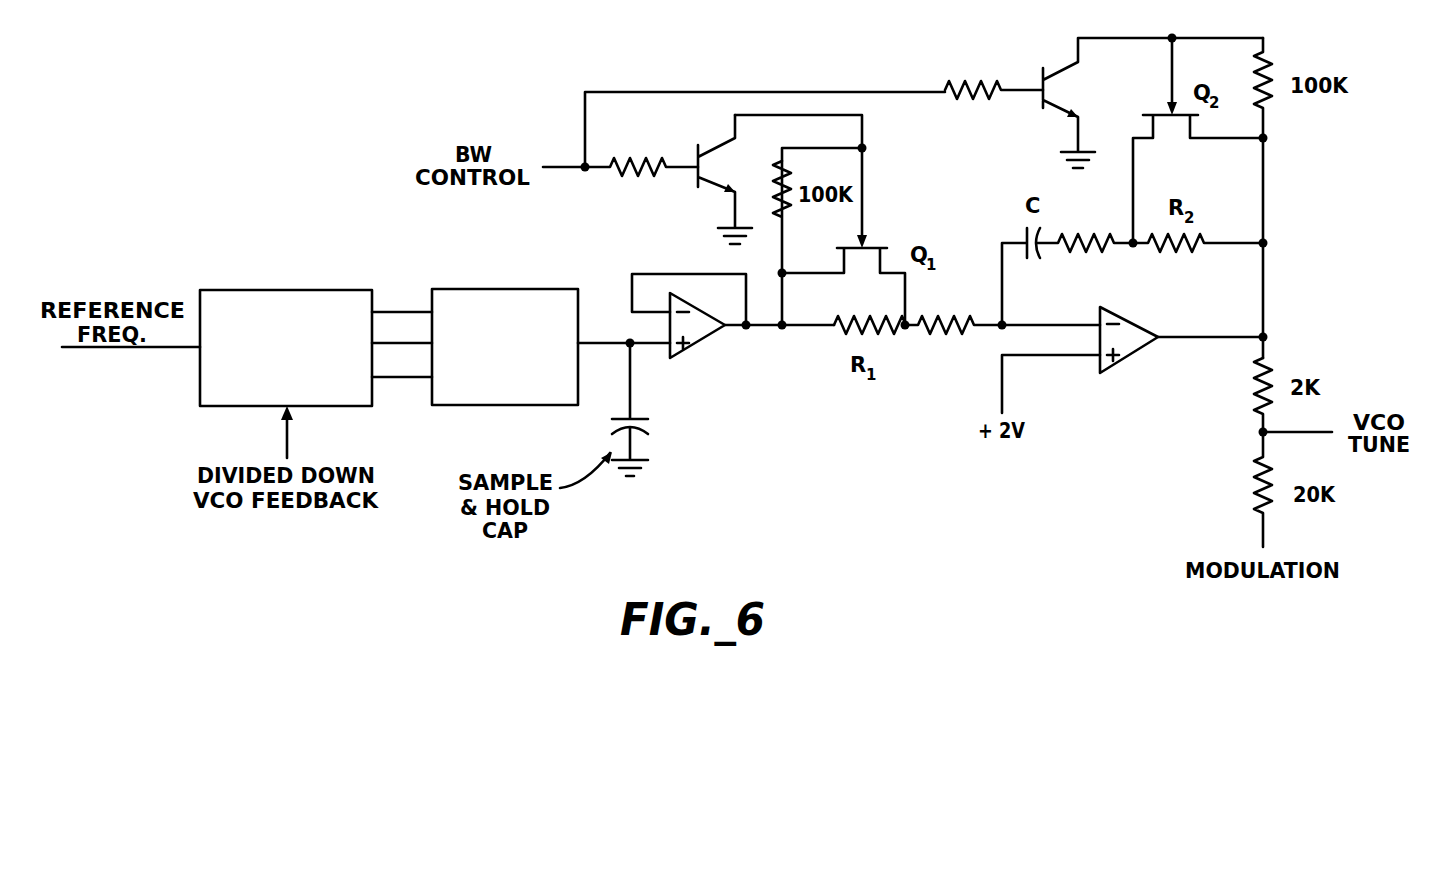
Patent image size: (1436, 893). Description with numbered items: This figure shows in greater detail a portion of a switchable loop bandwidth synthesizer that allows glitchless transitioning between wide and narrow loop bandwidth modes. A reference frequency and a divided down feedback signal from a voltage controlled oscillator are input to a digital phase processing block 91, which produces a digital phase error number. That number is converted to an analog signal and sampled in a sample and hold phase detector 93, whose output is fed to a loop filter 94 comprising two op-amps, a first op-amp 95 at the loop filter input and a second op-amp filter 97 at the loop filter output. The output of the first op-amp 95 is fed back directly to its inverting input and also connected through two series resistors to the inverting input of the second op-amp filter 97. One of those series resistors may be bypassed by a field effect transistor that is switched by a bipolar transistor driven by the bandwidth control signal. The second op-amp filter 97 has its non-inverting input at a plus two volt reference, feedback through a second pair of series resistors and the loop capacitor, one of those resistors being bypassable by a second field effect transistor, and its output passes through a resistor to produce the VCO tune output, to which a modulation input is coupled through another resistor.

The digital phase processing block 91 is at (322, 290).
The sample and hold phase detector 93 is at (528, 289).
The loop filter 94 is at (935, 38).
The first op-amp 95 is at (695, 350).
The second op-amp filter 97 is at (1134, 370).